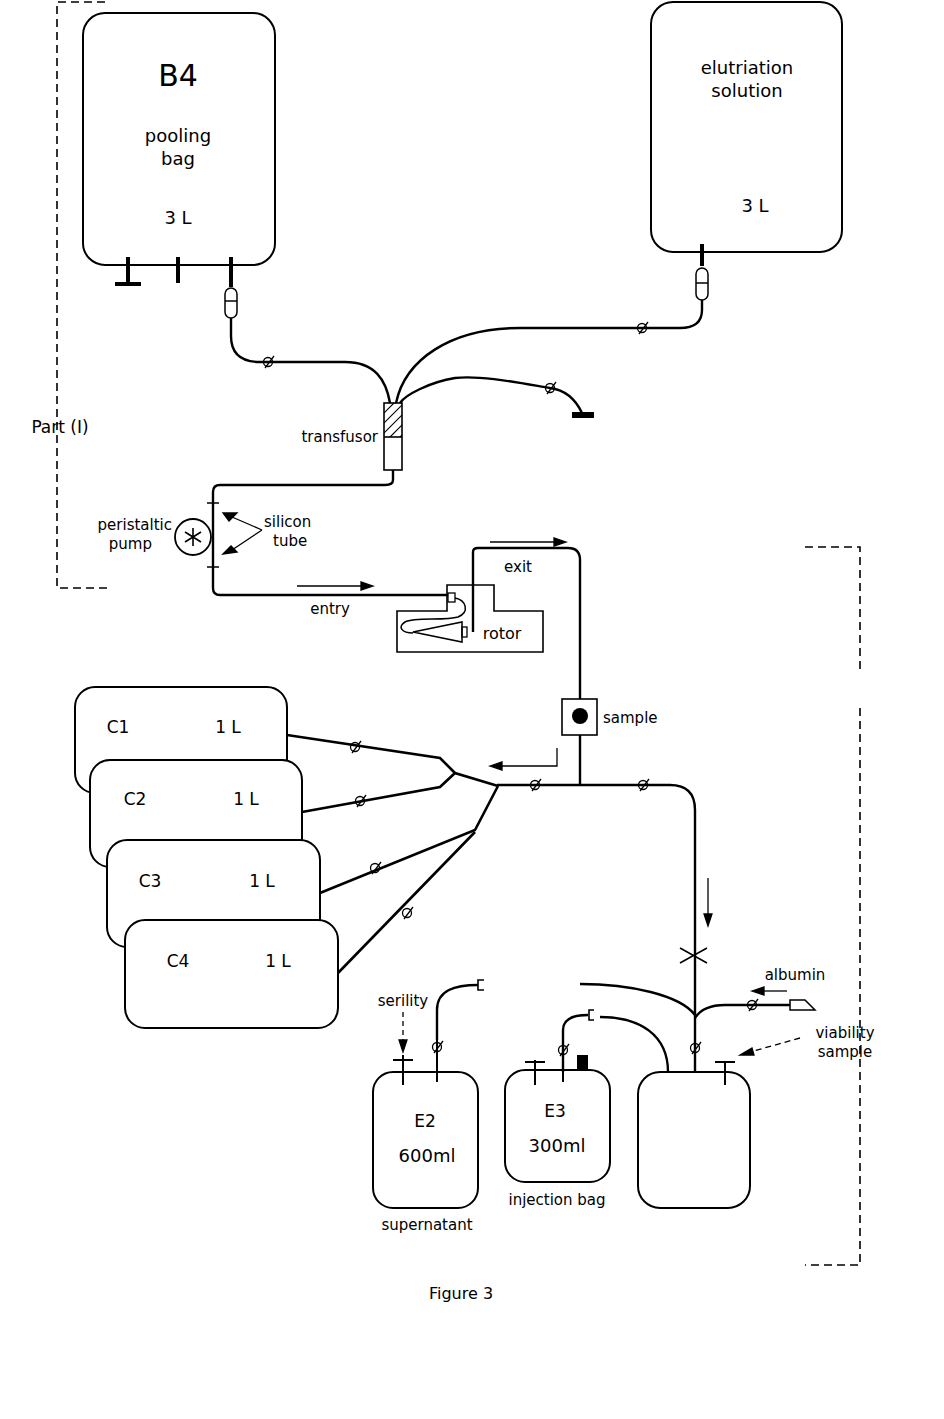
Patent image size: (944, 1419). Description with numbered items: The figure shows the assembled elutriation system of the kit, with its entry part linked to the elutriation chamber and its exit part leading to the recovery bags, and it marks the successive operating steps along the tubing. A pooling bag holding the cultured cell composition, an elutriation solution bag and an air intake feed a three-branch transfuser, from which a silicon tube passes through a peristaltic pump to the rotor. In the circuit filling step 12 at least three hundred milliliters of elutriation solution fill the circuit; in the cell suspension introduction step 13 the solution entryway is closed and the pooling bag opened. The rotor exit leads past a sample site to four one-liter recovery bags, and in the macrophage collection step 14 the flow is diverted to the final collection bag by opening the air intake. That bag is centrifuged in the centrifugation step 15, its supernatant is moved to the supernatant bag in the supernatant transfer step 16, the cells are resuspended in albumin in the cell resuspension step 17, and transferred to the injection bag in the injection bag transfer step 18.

The circuit filling step 12 is at (538, 313).
The cell suspension introduction step 13 is at (346, 350).
The macrophage collection step 14 is at (505, 387).
The collection bag centrifugation step 15 is at (684, 1230).
The supernatant transfer step 16 is at (665, 977).
The cell resuspension step 17 is at (853, 906).
The injection bag transfer step 18 is at (598, 1030).